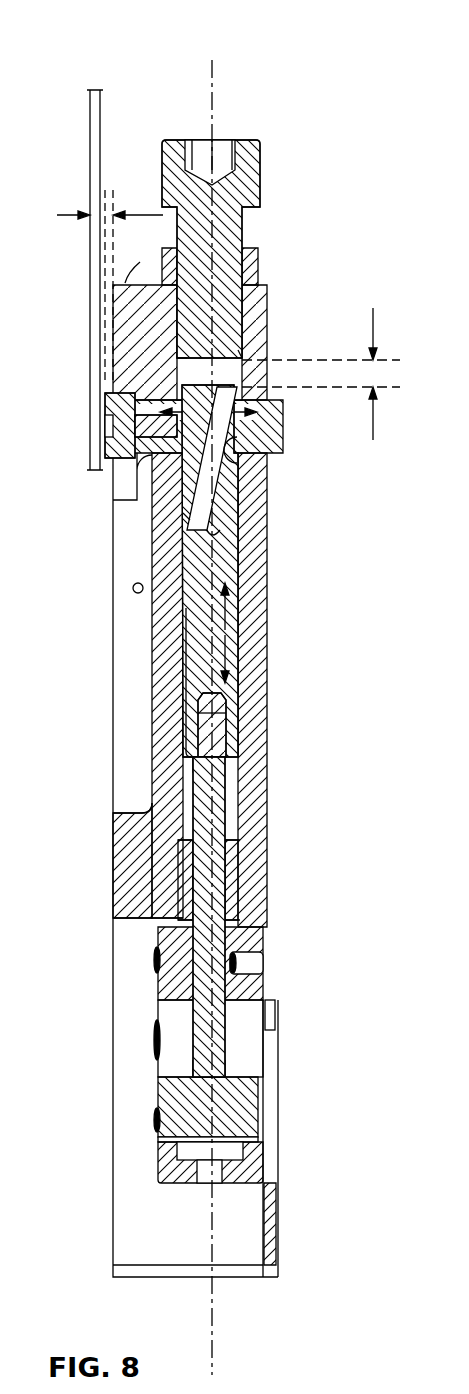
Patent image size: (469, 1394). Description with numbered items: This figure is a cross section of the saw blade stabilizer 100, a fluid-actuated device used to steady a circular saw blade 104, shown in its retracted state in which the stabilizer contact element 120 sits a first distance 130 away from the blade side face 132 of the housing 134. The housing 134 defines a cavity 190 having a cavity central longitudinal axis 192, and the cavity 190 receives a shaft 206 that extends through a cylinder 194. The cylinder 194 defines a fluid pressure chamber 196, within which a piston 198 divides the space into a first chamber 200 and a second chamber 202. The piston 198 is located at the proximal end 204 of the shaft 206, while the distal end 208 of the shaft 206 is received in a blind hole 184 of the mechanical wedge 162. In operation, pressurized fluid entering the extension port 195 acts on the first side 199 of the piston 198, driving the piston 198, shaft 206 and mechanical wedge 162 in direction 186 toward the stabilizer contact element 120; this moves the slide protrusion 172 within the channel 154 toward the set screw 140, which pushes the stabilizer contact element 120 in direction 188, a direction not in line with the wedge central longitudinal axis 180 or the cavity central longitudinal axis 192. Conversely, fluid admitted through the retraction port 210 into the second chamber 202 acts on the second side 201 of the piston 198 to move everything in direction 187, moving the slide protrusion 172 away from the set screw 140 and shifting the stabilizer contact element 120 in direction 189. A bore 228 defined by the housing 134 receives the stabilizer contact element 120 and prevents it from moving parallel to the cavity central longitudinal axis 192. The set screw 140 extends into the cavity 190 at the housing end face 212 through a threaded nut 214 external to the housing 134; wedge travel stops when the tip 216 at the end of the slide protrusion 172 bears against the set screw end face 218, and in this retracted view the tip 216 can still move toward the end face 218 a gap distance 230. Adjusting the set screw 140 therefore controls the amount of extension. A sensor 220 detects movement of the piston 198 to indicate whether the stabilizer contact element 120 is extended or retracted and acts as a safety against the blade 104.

The saw blade stabilizer 100 is at (292, 100).
The circular saw blade 104 is at (100, 128).
The stabilizer contact element 120 is at (138, 482).
The first distance 130 is at (62, 215).
The blade side face 132 is at (113, 312).
The housing 134 is at (130, 862).
The set screw 140 is at (252, 170).
The channel 154 is at (233, 472).
The mechanical wedge 162 is at (193, 556).
The slide protrusion 172 is at (183, 520).
The wedge central longitudinal axis 180 is at (245, 560).
The blind hole 184 is at (215, 700).
The direction 186 is at (228, 616).
The direction 187 is at (228, 645).
The direction 188 is at (262, 435).
The direction 189 is at (222, 492).
The cavity 190 is at (232, 795).
The cavity central longitudinal axis 192 is at (212, 72).
The cylinder 194 is at (158, 960).
The extension port 195 is at (200, 1185).
The fluid pressure chamber 196 is at (172, 1028).
The piston 198 is at (240, 1105).
The first side 199 is at (160, 1150).
The first chamber 200 is at (262, 1138).
The second side 201 is at (155, 1066).
The second chamber 202 is at (260, 1022).
The proximal end 204 is at (240, 1070).
The shaft 206 is at (218, 890).
The distal end 208 is at (200, 750).
The retraction port 210 is at (248, 962).
The housing end face 212 is at (125, 283).
The threaded nut 214 is at (253, 268).
The tip 216 is at (237, 355).
The set screw end face 218 is at (187, 373).
The sensor 220 is at (268, 1237).
The bore 228 is at (243, 396).
The gap distance 230 is at (373, 320).